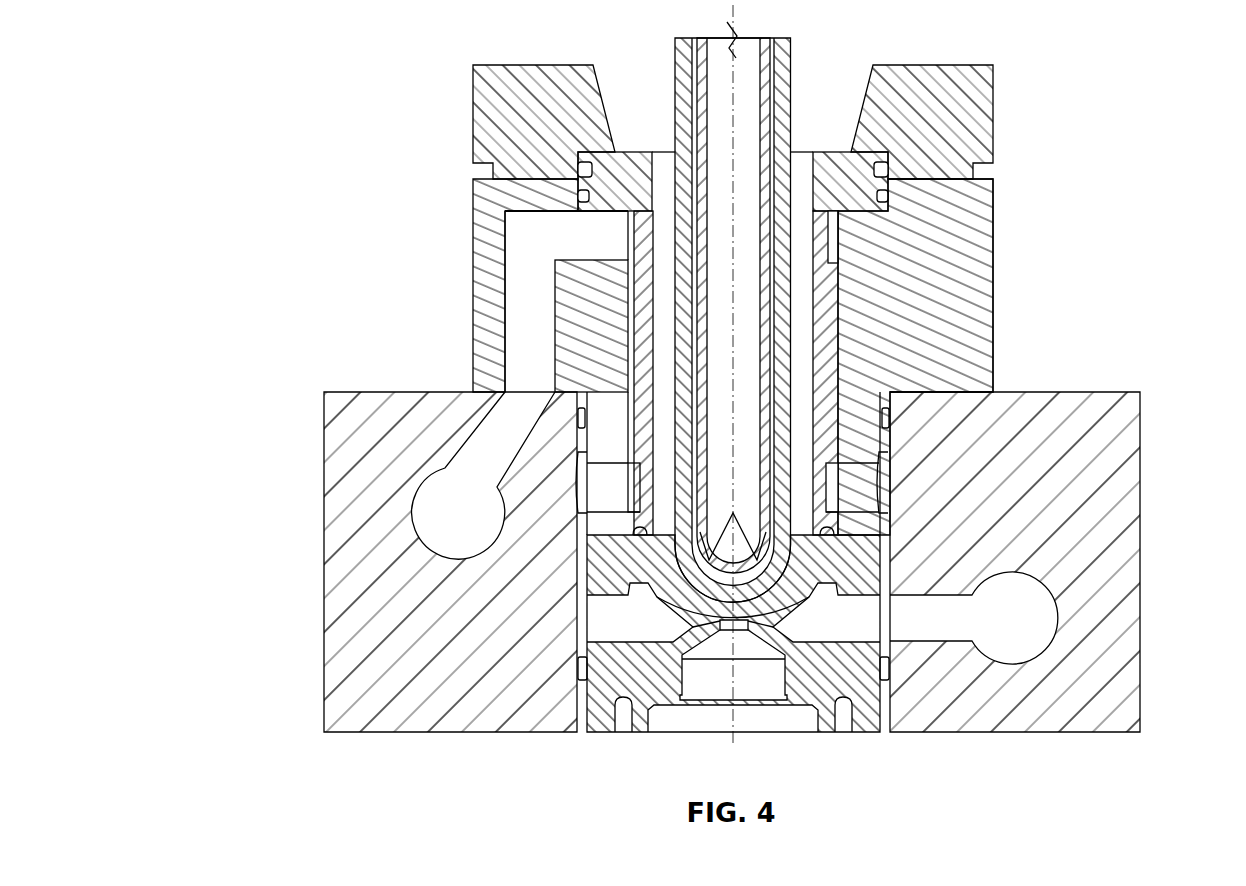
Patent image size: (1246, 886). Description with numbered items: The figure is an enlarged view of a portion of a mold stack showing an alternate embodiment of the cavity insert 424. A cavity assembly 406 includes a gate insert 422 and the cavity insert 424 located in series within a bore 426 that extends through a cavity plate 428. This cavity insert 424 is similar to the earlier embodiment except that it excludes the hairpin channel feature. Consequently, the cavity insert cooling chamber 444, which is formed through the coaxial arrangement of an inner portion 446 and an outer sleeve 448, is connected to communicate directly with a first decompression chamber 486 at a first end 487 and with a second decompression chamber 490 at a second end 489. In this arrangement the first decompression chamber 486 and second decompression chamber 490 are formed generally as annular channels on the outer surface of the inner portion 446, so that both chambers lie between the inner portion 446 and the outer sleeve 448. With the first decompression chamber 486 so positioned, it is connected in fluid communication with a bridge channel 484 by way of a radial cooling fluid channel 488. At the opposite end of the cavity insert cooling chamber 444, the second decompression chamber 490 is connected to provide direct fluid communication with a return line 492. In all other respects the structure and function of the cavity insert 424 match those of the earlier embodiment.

The cavity assembly 406 is at (368, 450).
The gate insert 422 is at (600, 713).
The cavity insert 424 is at (963, 237).
The bore 426 is at (487, 298).
The cavity plate 428 is at (1115, 692).
The cavity insert cooling chamber 444 is at (838, 382).
The inner portion 446 is at (838, 298).
The outer sleeve 448 is at (963, 323).
The bridge channel 484 is at (578, 497).
The first decompression chamber 486 is at (833, 488).
The first end 487 is at (627, 452).
The radial cooling fluid channel 488 is at (603, 485).
The second end 489 is at (632, 277).
The second decompression chamber 490 is at (838, 230).
The return line 492 is at (548, 235).